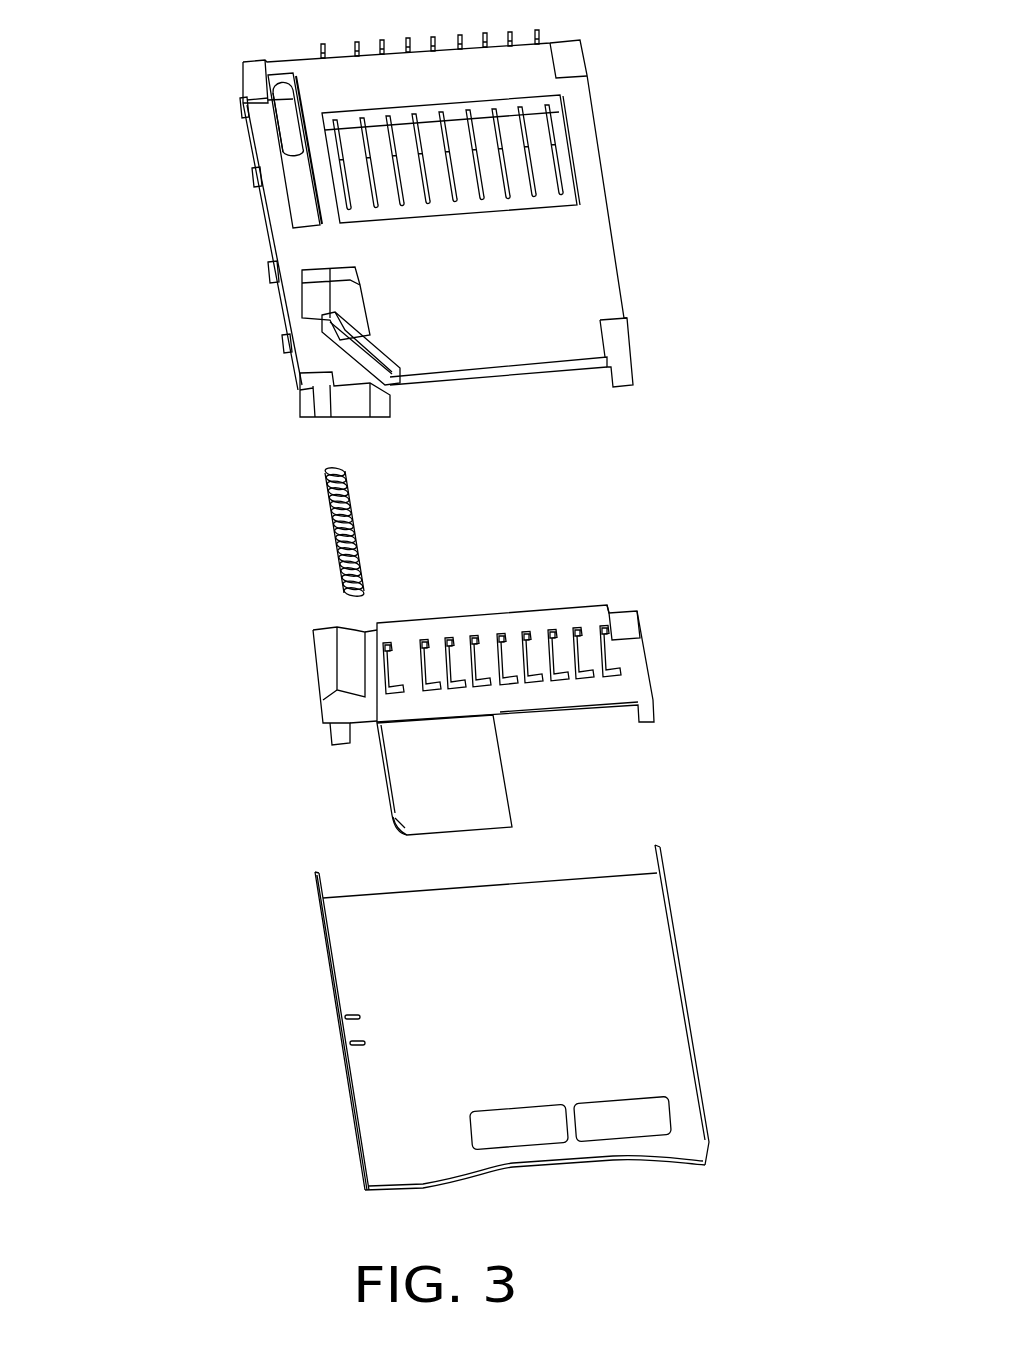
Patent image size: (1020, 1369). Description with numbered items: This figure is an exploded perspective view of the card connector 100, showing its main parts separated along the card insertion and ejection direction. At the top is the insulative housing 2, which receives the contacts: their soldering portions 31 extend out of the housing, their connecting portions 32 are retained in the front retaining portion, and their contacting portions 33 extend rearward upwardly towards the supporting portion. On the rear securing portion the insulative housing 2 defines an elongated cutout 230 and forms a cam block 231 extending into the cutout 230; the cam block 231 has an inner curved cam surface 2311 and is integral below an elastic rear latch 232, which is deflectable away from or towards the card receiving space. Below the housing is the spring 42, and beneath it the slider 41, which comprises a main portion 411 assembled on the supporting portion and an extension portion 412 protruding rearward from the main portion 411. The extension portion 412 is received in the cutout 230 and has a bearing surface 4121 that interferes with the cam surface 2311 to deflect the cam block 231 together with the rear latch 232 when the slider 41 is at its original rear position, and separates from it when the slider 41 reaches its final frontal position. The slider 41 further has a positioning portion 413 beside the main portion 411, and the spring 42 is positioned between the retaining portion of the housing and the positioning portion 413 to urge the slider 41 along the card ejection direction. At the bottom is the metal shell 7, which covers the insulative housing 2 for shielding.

The card connector 100 is at (208, 55).
The insulative housing 2 is at (603, 267).
The soldering portions 31 is at (542, 31).
The connecting portions 32 is at (553, 112).
The contacting portions 33 is at (558, 175).
The elongated cutout 230 is at (350, 293).
The cam block 231 is at (380, 372).
The cam surface 2311 is at (378, 350).
The rear latch 232 is at (305, 405).
The spring 42 is at (370, 525).
The slider 41 is at (660, 660).
The main portion 411 is at (625, 617).
The extension portion 412 is at (405, 770).
The bearing surface 4121 is at (402, 830).
The positioning portion 413 is at (325, 661).
The metal shell 7 is at (690, 982).